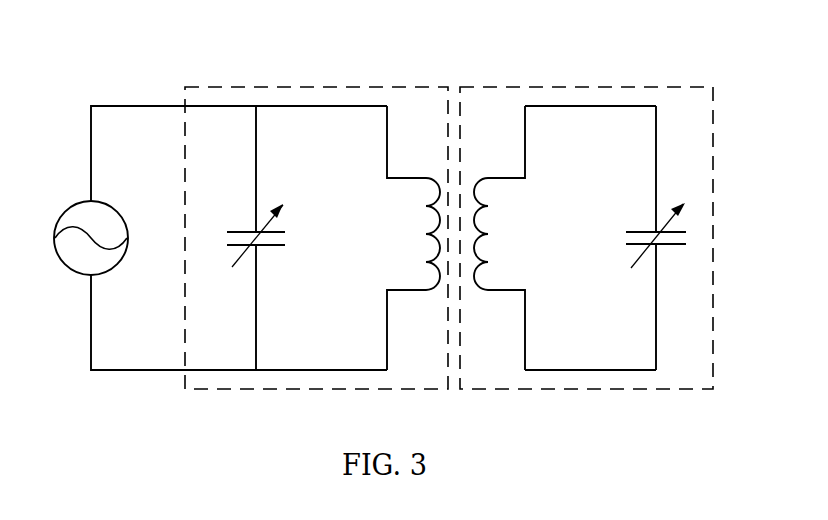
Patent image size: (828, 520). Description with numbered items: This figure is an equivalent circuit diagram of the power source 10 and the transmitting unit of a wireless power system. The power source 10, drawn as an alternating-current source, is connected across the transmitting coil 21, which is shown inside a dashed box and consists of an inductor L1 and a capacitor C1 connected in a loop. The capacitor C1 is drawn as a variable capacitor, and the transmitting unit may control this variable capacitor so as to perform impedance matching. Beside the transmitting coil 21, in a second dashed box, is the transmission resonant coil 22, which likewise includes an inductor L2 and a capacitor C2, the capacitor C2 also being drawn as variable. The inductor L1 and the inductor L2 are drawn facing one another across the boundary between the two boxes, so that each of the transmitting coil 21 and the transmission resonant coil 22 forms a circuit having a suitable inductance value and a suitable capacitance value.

The power source 10 is at (68, 208).
The transmitting coil 21 is at (352, 87).
The transmission resonant coil 22 is at (522, 88).
The capacitor C1 is at (241, 238).
The inductor L1 is at (412, 238).
The inductor L2 is at (501, 238).
The capacitor C2 is at (663, 238).